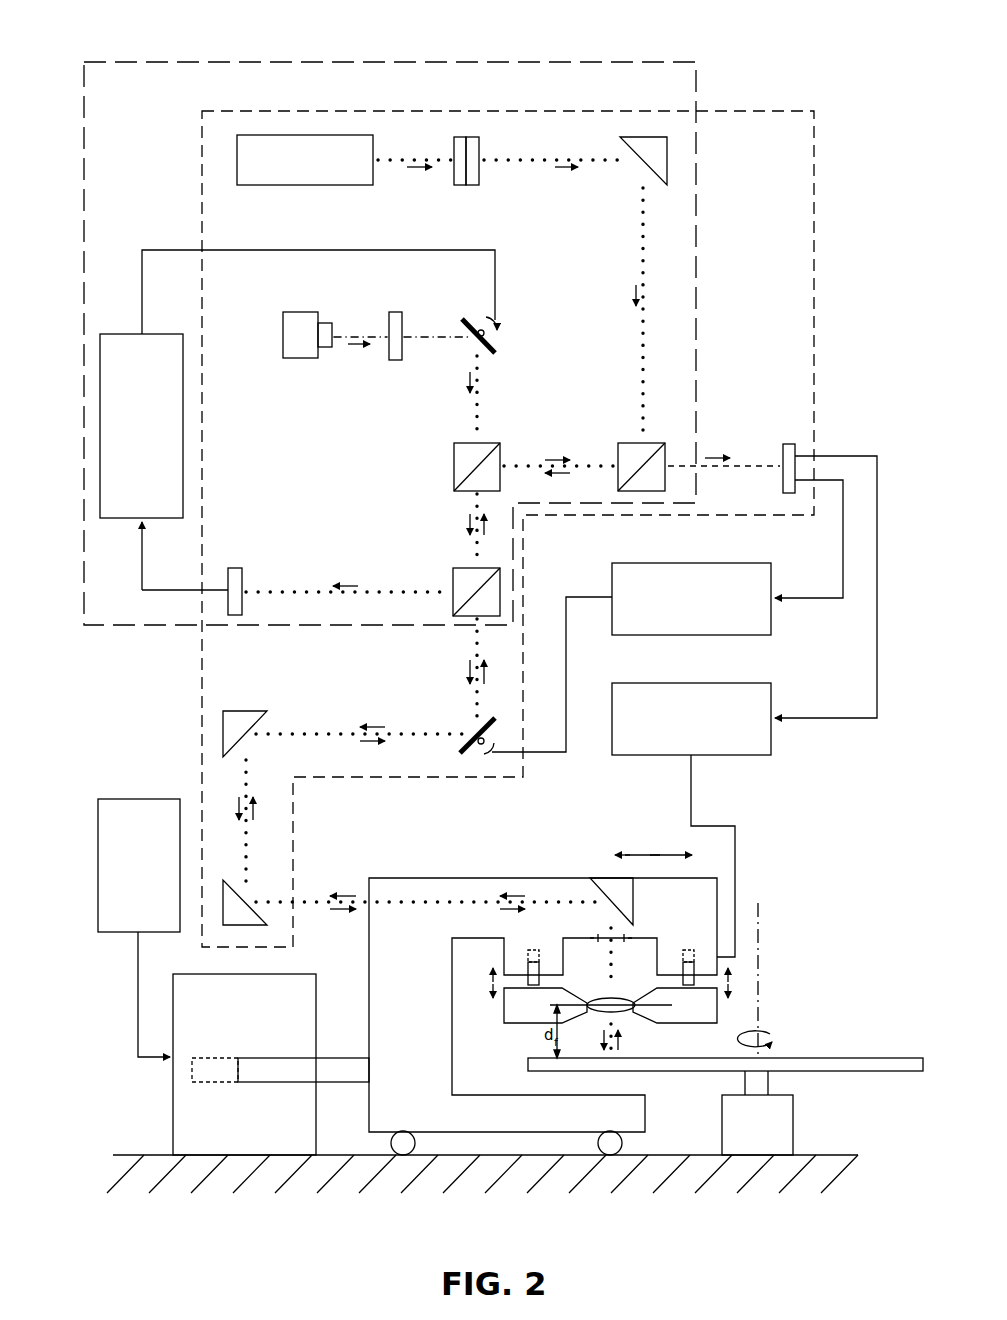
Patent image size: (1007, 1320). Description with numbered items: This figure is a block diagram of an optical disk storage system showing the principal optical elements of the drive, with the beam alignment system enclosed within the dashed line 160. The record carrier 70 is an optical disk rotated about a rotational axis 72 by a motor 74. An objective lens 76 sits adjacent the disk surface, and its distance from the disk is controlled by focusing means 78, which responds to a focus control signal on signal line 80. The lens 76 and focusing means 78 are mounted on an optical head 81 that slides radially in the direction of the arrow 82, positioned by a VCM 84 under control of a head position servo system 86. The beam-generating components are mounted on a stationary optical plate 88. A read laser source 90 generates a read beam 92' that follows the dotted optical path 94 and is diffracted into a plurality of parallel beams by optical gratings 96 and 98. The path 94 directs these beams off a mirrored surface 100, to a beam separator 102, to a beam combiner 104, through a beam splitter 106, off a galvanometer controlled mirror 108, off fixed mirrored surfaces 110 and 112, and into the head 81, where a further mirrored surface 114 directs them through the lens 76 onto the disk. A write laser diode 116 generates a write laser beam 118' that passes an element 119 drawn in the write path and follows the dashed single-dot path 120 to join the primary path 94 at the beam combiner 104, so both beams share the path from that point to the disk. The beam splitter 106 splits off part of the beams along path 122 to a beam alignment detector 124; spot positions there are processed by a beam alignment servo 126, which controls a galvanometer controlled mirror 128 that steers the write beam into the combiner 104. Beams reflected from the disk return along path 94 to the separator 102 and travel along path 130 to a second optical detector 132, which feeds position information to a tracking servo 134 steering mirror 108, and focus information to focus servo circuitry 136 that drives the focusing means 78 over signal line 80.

The dashed line 160 is at (640, 62).
The stationary optical plate 88 is at (814, 256).
The read laser source 90 is at (345, 187).
The read beam 92' is at (415, 191).
The optical path 94 is at (530, 170).
The optical grating 96 is at (458, 137).
The optical grating 98 is at (476, 137).
The mirrored surface 100 is at (624, 150).
The beam separator 102 is at (648, 445).
The beam combiner 104 is at (498, 448).
The beam splitter 106 is at (460, 568).
The galvanometer controlled mirror 108 is at (460, 746).
The fixed mirrored surface 110 is at (266, 722).
The fixed mirrored surface 112 is at (270, 926).
The mirrored surface 114 is at (598, 888).
The write laser diode 116 is at (300, 360).
The write laser beam 118' is at (352, 366).
The collimating lens 119 is at (396, 312).
The write optical path 120 is at (420, 344).
The optical path 122 is at (364, 594).
The beam alignment detector 124 is at (236, 568).
The beam alignment servo 126 is at (113, 334).
The galvanometer controlled mirror 128 is at (484, 345).
The optical path 130 is at (758, 470).
The second optical detector 132 is at (786, 446).
The tracking servo 134 is at (771, 578).
The focus servo circuitry 136 is at (771, 698).
The record carrier 70 is at (878, 1058).
The rotational axis 72 is at (760, 986).
The motor 74 is at (794, 1128).
The objective lens 76 is at (628, 1013).
The focusing means 78 is at (658, 960).
The signal line 80 is at (736, 852).
The optical head 81 is at (476, 878).
The arrow 82 is at (650, 855).
The voice coil motor 84 is at (316, 1002).
The head position servo system 86 is at (140, 799).